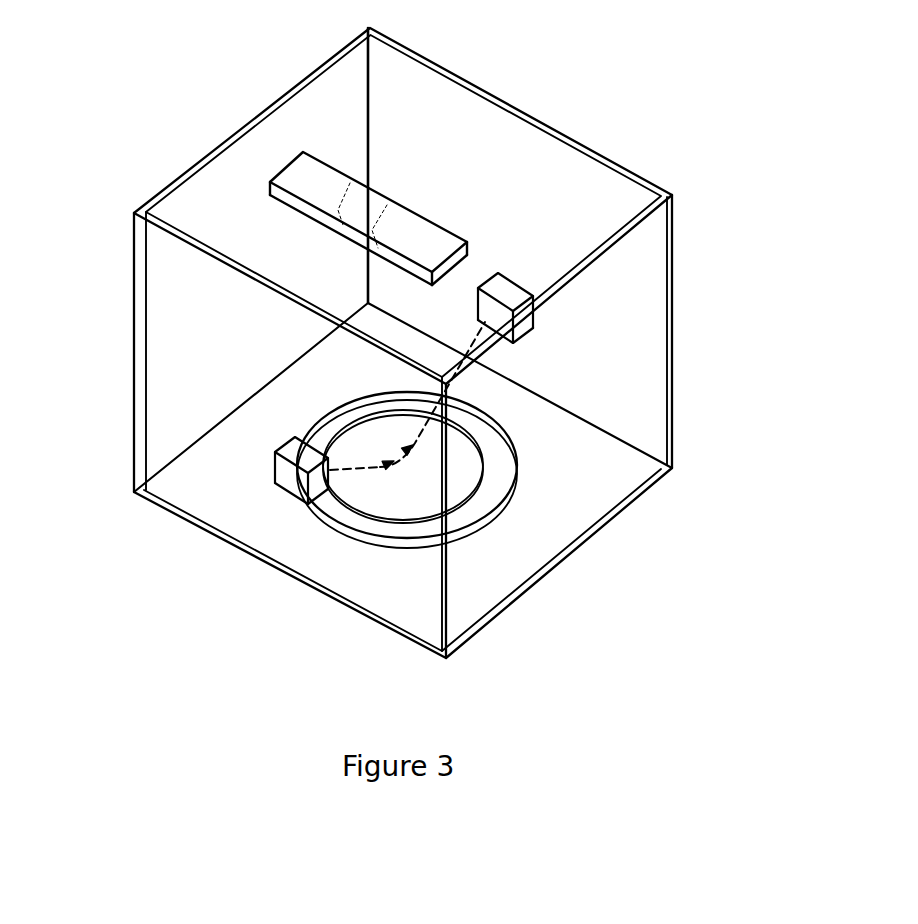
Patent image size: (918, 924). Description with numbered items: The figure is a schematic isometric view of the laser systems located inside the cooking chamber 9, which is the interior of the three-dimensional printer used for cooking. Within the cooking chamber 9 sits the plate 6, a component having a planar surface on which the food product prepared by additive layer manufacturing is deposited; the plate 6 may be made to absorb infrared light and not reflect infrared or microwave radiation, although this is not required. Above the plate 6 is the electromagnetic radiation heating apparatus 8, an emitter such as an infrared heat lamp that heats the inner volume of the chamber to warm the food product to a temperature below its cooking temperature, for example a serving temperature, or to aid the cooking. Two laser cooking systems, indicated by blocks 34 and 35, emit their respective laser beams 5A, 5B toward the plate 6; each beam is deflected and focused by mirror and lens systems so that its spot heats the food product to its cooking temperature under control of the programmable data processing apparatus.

The cooking chamber 9 is at (605, 152).
The electromagnetic radiation heating apparatus 8 is at (343, 197).
The camera / detector 35 is at (505, 292).
The second detector 34 is at (300, 475).
The plate 6 is at (462, 482).
The laser beam 5A is at (376, 473).
The laser beam 5B is at (468, 370).